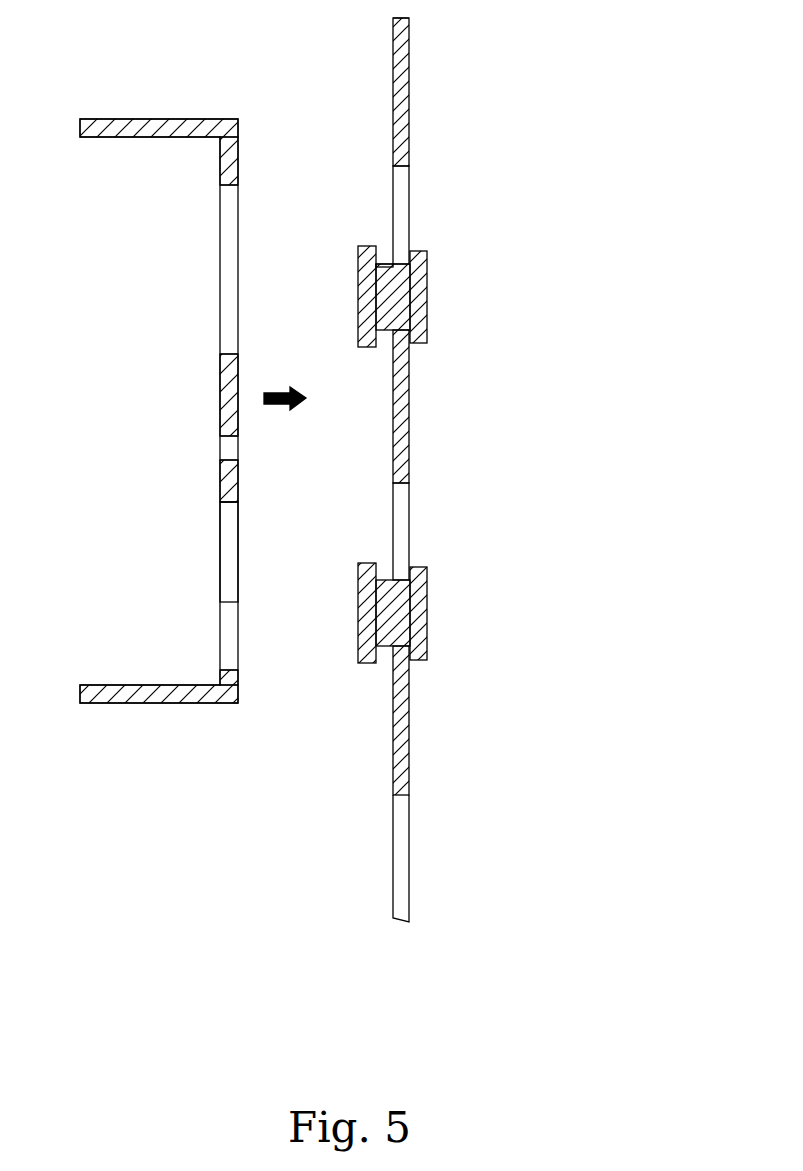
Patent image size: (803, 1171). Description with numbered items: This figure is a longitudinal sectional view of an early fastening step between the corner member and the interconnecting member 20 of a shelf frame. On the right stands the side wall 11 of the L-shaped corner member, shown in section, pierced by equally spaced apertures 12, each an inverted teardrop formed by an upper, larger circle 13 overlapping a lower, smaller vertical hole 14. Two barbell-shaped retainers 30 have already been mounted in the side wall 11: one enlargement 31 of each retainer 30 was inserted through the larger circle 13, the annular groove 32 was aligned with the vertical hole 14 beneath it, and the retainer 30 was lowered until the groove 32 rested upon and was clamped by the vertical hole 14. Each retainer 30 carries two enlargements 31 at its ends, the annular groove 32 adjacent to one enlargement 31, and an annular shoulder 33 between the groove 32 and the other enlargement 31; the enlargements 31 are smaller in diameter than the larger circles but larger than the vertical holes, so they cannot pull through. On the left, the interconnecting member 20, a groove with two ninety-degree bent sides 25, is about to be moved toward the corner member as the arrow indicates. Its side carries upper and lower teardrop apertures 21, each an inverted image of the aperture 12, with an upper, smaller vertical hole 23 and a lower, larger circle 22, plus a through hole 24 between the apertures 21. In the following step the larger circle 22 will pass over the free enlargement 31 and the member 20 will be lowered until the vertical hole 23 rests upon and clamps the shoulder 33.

The side wall 11 is at (455, 462).
The aperture 12 is at (420, 210).
The larger circle 13 is at (405, 513).
The vertical hole 14 is at (393, 613).
The interconnecting member 20 is at (151, 407).
The aperture 21 is at (156, 369).
The larger circle 22 is at (228, 628).
The vertical hole 23 is at (226, 520).
The through hole 24 is at (228, 447).
The bent side 25 is at (123, 118).
The retainer 30 is at (420, 502).
The enlargement 31 is at (358, 605).
The annular groove 32 is at (417, 511).
The annular shoulder 33 is at (390, 580).